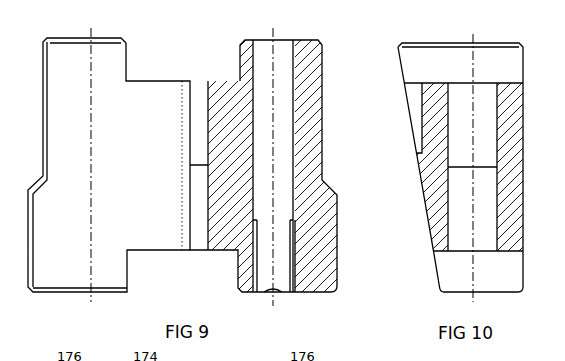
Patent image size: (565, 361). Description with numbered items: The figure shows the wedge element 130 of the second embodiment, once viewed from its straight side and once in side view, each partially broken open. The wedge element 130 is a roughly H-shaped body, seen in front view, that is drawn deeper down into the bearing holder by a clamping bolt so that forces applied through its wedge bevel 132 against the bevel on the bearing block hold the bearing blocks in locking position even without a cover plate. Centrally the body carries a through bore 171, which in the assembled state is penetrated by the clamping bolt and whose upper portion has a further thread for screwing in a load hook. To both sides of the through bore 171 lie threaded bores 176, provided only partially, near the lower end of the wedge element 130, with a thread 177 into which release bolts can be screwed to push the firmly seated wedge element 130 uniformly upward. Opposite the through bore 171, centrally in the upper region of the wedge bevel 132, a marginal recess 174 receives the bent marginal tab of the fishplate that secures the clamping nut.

In FIG. 9, the wedge element 130 is at (386, 118).
In FIG. 9, the threaded bores 176 is at (268, 58).
In FIG. 9, the through bore 171 is at (200, 234).
In FIG. 10, the through bore 171 is at (488, 245).
In FIG. 9, the thread 177 is at (290, 290).
In FIG. 10, the marginal recess 174 is at (415, 112).
In FIG. 10, the wedge bevel 132 is at (418, 170).